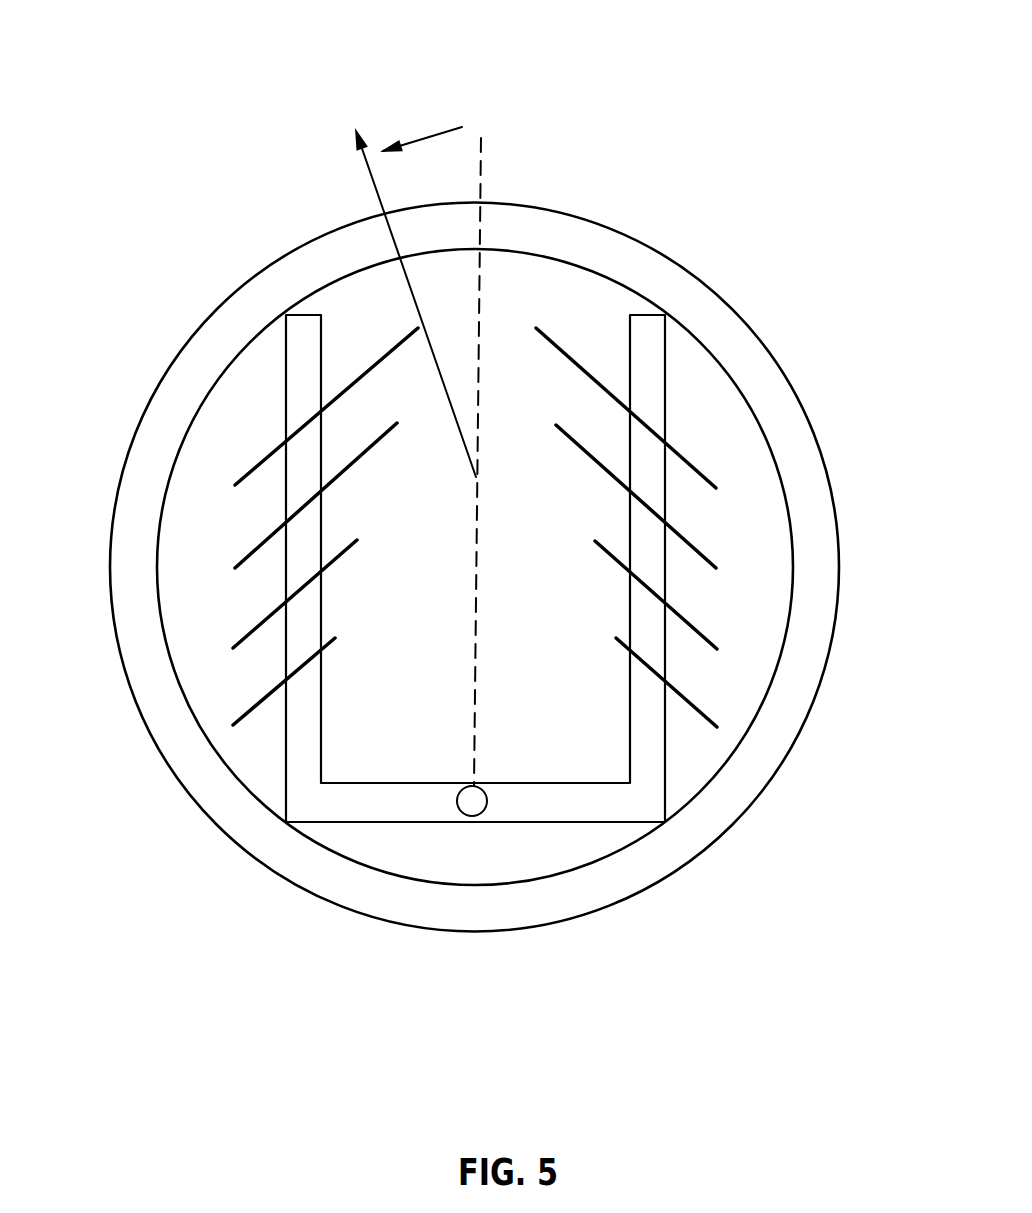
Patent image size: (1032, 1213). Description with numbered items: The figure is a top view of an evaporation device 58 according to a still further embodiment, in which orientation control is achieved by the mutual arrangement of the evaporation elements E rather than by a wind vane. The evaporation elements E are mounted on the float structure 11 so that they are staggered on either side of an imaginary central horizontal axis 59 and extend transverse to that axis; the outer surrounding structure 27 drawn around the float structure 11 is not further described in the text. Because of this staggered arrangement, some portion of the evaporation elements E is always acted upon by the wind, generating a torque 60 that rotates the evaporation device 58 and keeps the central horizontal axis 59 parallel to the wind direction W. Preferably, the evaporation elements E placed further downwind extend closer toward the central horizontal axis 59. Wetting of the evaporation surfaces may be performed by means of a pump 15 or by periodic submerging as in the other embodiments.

The float structure 11 is at (570, 815).
The pump 15 is at (457, 797).
The housing wall 27 is at (697, 840).
The evaporation device 58 is at (522, 315).
The central horizontal axis 59 is at (482, 168).
The torque 60 is at (435, 135).
The wind direction W is at (405, 285).
The evaporation elements E is at (716, 718).